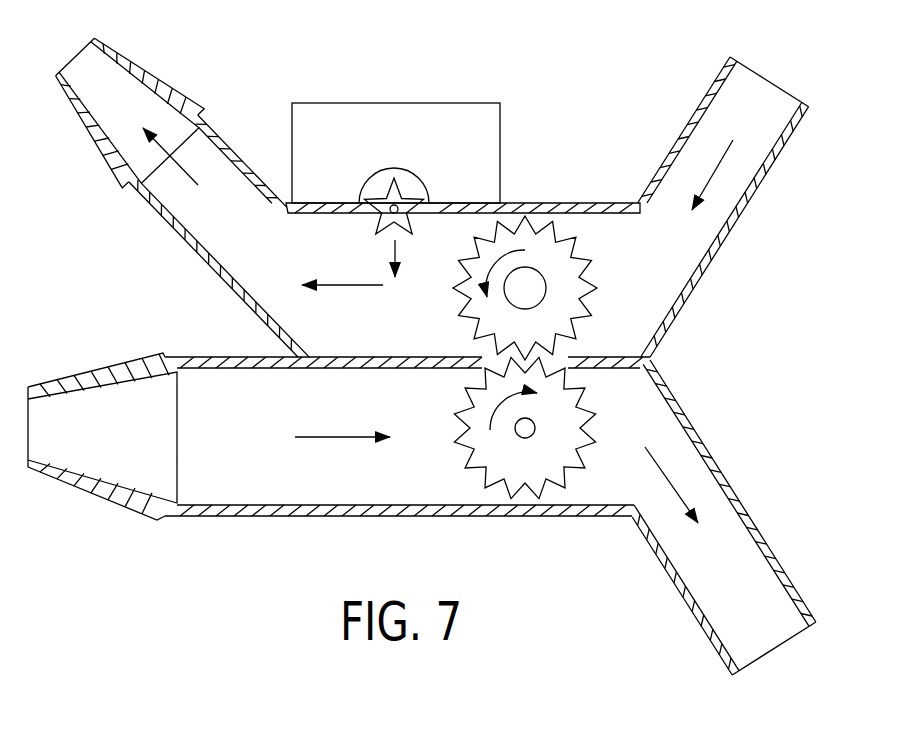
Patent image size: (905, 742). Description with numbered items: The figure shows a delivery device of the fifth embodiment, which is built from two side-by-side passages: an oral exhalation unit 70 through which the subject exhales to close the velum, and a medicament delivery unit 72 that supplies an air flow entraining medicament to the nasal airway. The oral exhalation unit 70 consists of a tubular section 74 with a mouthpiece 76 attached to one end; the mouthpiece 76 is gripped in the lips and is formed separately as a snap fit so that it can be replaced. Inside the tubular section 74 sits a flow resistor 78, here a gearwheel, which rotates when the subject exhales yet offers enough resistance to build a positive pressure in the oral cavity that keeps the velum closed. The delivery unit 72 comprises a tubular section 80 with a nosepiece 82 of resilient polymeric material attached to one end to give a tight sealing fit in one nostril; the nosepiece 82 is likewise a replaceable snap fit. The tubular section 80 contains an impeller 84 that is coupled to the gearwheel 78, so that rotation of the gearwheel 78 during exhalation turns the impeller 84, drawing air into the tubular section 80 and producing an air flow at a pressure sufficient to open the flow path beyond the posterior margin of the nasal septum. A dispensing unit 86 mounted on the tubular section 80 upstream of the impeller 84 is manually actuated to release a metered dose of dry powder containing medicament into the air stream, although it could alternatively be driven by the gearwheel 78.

The oral exhalation unit 70 is at (703, 417).
The medicament delivery unit 72 is at (727, 264).
The tubular section 74 is at (278, 517).
The mouthpiece 76 is at (132, 512).
The flow resistor 78 is at (538, 482).
The tubular section 80 is at (240, 152).
The nosepiece 82 is at (163, 80).
The impeller 84 is at (553, 242).
The dispensing unit 86 is at (413, 103).